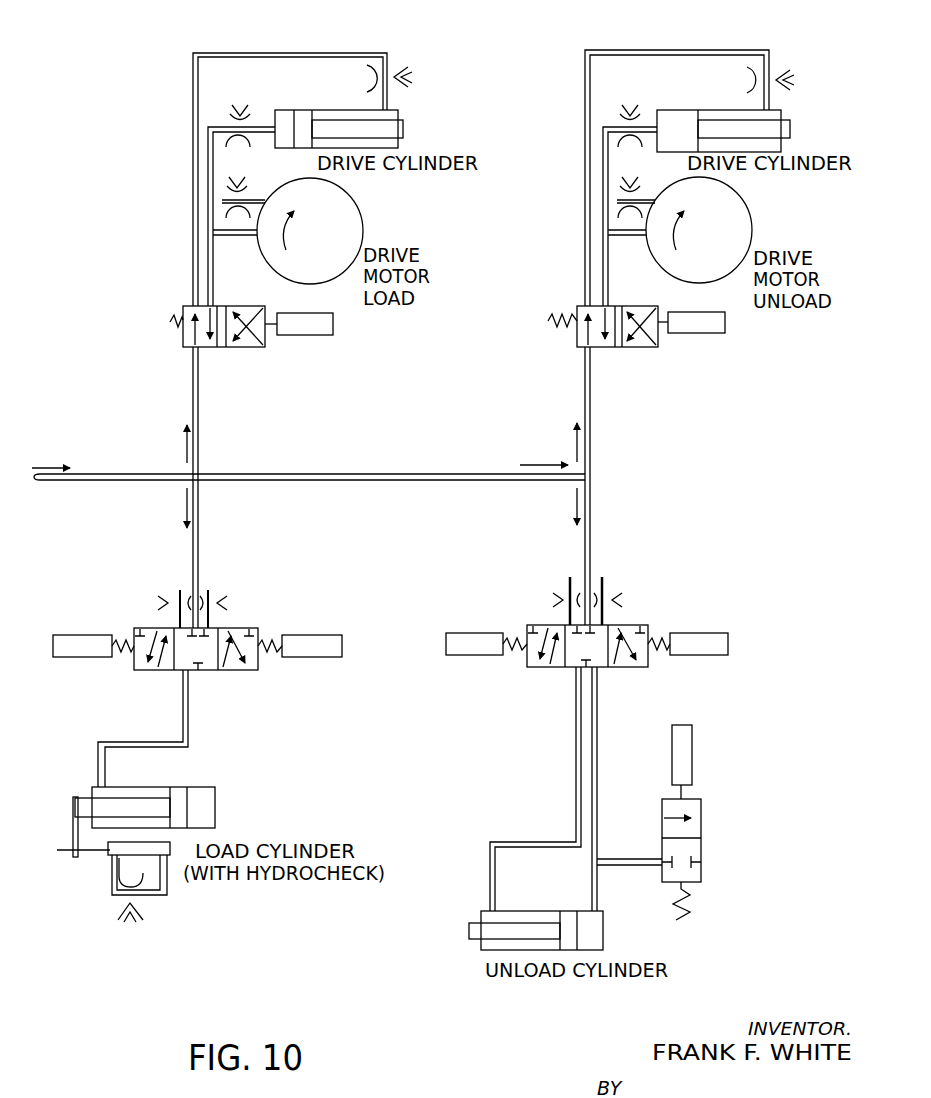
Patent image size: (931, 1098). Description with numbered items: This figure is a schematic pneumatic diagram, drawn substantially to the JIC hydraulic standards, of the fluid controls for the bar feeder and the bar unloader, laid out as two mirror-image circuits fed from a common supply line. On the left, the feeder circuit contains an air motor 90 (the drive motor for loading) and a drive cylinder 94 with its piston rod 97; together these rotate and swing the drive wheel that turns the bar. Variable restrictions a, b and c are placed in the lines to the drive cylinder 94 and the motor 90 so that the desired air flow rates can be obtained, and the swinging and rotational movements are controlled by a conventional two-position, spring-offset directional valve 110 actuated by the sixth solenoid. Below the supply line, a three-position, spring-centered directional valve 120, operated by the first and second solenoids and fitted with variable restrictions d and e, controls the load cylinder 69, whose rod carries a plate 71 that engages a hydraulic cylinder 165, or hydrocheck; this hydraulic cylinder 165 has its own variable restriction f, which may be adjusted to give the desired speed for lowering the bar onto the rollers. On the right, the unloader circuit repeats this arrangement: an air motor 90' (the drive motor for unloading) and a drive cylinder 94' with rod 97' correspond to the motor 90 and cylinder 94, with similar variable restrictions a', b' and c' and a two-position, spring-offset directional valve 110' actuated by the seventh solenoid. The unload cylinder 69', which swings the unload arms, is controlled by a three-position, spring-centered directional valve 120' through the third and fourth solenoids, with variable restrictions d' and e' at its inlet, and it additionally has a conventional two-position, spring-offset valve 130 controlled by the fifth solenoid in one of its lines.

The variable restriction a is at (402, 55).
The variable restriction b is at (261, 106).
The variable restriction c is at (255, 186).
The pneumatic cylinder 94 is at (336, 113).
The piston rod 97 is at (387, 119).
The air motor 90 is at (336, 231).
The directional valve 110 is at (251, 348).
The directional valve 120 is at (197, 650).
The variable restriction d is at (159, 568).
The variable restriction e is at (239, 569).
The load cylinder 69 is at (145, 791).
The plate 71 is at (80, 795).
The hydraulic cylinder 165 is at (112, 868).
The variable restriction f is at (103, 922).
The variable restriction a' is at (789, 55).
The variable restriction b' is at (621, 105).
The variable restriction c' is at (600, 197).
The pneumatic cylinder 94' is at (719, 110).
The piston rod 97' is at (772, 113).
The air motor 90' is at (727, 230).
The directional valve 110' is at (636, 344).
The directional valve 120' is at (587, 636).
The variable restriction d' is at (529, 571).
The variable restriction e' is at (649, 557).
The unload cylinder 69' is at (536, 908).
The spring-offset valve 130 is at (701, 828).